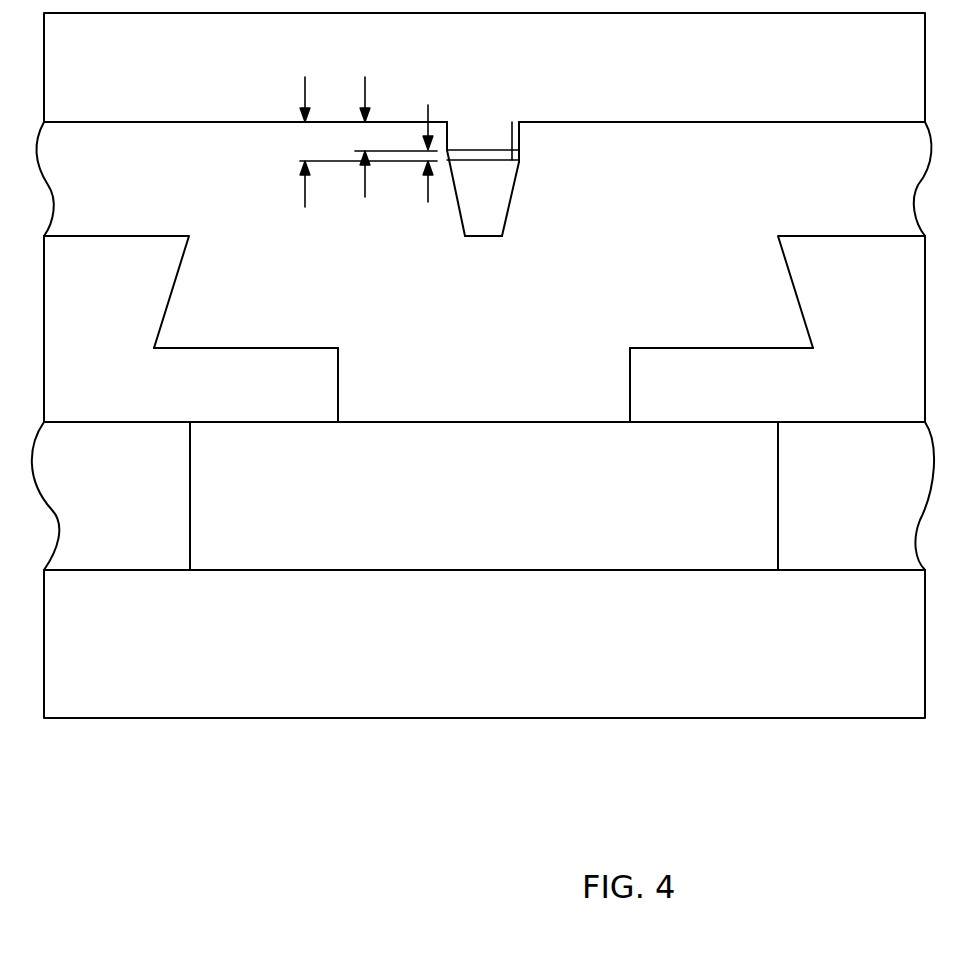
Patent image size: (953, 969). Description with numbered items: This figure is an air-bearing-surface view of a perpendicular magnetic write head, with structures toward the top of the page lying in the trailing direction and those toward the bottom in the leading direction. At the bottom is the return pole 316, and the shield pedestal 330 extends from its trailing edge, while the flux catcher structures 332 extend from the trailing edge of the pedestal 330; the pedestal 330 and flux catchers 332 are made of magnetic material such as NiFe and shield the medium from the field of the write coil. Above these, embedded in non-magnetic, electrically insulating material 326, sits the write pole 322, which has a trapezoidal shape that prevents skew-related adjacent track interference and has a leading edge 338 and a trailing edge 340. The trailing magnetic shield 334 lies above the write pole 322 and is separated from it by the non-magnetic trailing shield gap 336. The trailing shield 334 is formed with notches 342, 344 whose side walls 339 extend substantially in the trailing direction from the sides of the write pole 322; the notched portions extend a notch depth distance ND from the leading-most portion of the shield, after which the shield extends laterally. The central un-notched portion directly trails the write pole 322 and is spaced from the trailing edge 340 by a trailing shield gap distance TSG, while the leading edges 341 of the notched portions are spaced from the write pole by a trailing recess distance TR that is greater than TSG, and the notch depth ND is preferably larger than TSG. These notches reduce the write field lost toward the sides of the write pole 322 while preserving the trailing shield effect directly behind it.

The return pole 316 is at (540, 641).
The write pole 322 is at (500, 195).
The non-magnetic, electrically insulating material 326 is at (540, 326).
The pedestal structure 330 is at (548, 495).
The flux catcher structure 332 is at (195, 380).
The trailing magnetic shield 334 is at (530, 66).
The non-magnetic trailing shield gap 336 is at (512, 157).
The leading edge 338 is at (485, 236).
The side walls 339 is at (447, 140).
The trailing edge 340 is at (511, 123).
The leading edges 341 is at (95, 123).
The notch 342 is at (590, 122).
The notch 344 is at (385, 122).
The trailing recess distance TR is at (305, 203).
The notch depth distance ND is at (365, 197).
The trailing shield gap distance TSG is at (428, 203).